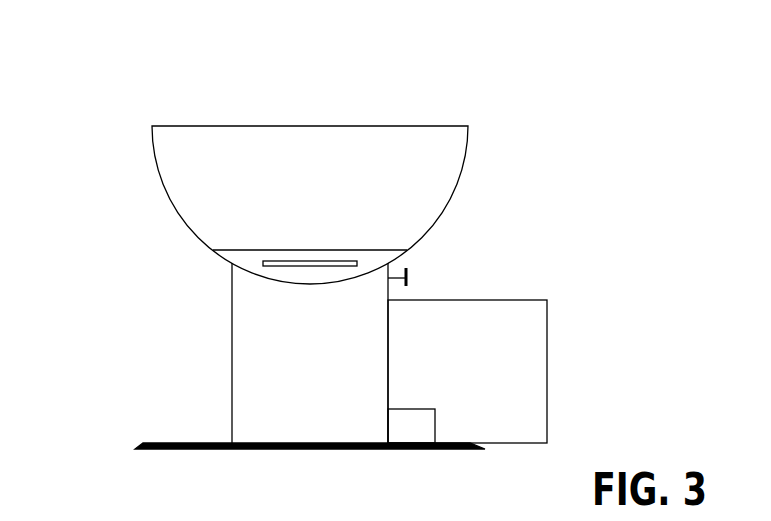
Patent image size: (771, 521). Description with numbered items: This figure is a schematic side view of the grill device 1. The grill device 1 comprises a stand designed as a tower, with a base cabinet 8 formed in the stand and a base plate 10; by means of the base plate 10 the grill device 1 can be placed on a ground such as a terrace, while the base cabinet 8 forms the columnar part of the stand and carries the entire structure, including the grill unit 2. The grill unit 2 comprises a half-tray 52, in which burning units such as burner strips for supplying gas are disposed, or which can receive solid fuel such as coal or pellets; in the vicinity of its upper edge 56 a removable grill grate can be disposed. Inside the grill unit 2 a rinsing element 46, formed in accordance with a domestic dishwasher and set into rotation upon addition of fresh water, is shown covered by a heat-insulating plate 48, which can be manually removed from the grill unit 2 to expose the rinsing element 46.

The grill device 1 is at (334, 254).
The grill unit 2 is at (207, 125).
The base cabinet 8 is at (275, 377).
The base plate 10 is at (190, 447).
The rinsing element 46 is at (310, 268).
The heat-insulating plate 48 is at (406, 255).
The half-tray 52 is at (200, 205).
The upper edge 56 is at (246, 142).